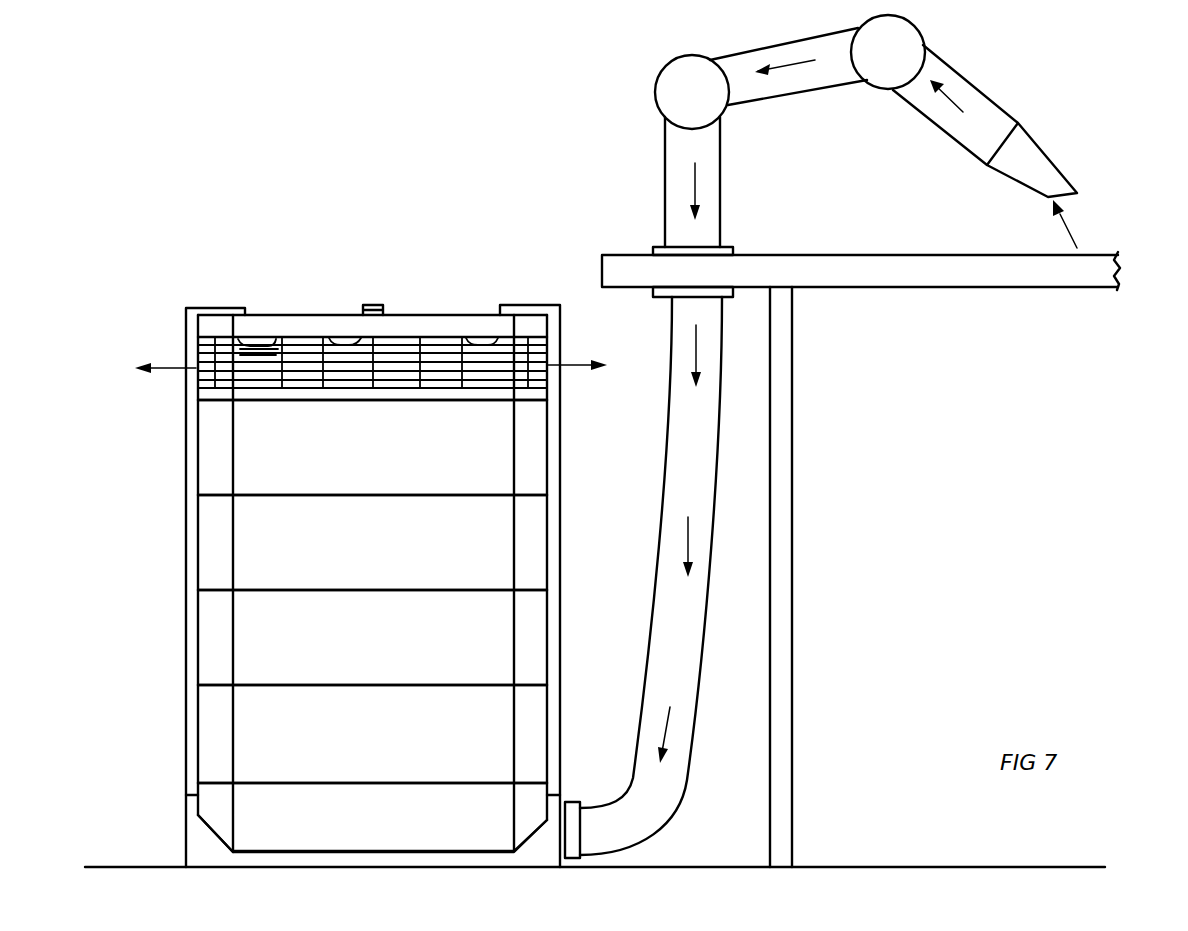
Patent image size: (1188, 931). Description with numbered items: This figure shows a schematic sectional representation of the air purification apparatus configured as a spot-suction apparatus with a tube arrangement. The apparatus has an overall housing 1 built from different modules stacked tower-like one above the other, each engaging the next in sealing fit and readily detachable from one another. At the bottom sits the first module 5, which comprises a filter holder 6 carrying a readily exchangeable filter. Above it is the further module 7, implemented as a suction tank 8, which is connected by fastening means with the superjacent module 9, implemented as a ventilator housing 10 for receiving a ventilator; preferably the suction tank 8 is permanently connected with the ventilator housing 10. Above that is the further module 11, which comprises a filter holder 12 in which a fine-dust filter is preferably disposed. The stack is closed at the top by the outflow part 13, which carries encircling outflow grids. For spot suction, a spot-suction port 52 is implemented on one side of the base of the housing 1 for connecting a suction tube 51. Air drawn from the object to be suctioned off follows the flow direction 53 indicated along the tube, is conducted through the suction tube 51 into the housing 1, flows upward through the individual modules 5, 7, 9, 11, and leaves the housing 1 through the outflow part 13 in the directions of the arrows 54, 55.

The overall housing 1 is at (184, 620).
The first module 5 is at (411, 717).
The filter holder 6 is at (482, 752).
The further module 7 is at (482, 653).
The suction tank 8 is at (220, 823).
The superjacent module 9 is at (418, 531).
The ventilator housing 10 is at (482, 560).
The further module 11 is at (423, 442).
The filter holder 12 is at (478, 467).
The outflow part 13 is at (395, 358).
The suction tube 51 is at (713, 543).
The spot-suction port 52 is at (575, 800).
The material flow 53 is at (1073, 230).
The arrow 54 is at (573, 365).
The arrow 55 is at (170, 368).